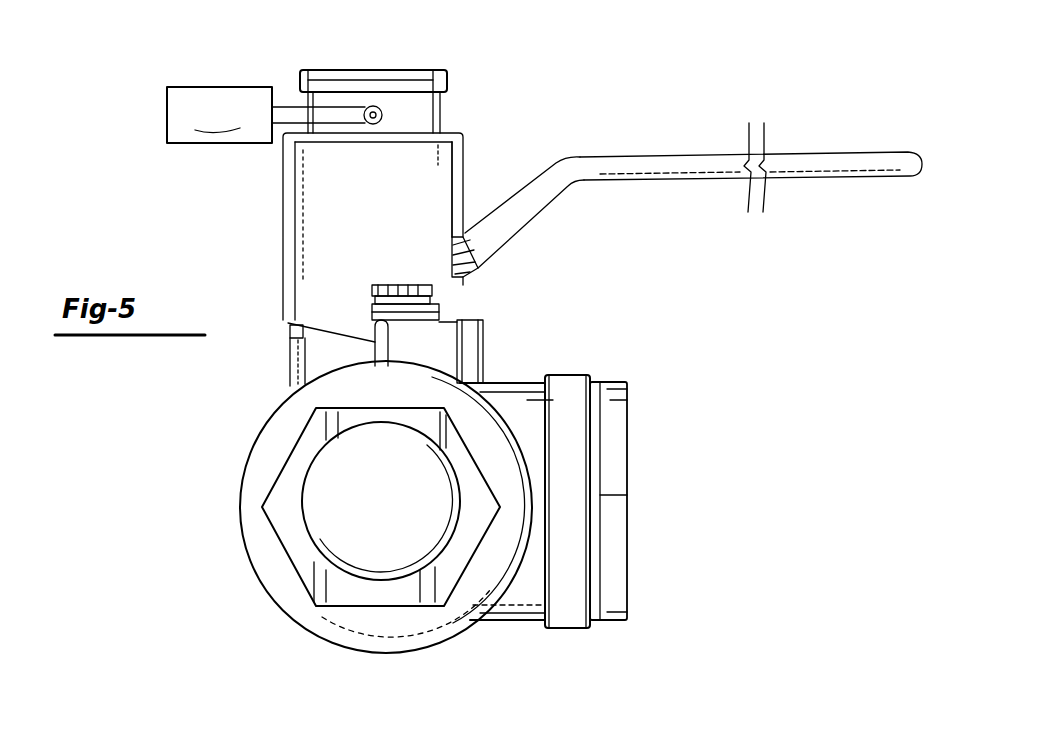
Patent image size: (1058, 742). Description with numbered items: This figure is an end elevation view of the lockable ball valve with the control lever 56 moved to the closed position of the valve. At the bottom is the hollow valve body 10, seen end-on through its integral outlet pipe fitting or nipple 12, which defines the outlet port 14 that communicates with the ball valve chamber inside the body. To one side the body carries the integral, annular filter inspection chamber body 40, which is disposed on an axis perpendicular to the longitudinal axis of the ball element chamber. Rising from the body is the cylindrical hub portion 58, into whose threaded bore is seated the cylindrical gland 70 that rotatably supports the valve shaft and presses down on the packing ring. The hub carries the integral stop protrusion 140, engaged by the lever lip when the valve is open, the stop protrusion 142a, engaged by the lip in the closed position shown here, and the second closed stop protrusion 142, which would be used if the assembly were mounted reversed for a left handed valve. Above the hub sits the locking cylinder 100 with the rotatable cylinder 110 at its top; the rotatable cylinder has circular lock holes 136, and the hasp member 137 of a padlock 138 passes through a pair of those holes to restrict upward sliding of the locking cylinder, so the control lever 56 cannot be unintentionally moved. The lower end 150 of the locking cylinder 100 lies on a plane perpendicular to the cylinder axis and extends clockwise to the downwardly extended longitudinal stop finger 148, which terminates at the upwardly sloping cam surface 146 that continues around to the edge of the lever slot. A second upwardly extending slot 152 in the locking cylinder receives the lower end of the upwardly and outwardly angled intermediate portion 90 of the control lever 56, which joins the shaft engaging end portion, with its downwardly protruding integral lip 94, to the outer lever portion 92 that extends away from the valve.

The hollow valve body 10 is at (257, 440).
The integral outlet pipe fitting or nipple 12 is at (308, 560).
The outlet port 14 is at (300, 492).
The filter inspection chamber body 40 is at (525, 382).
The control lever 56 is at (688, 162).
The cylindrical hub portion 58 is at (457, 332).
The cylindrical gland 70 is at (437, 292).
The intermediate portion of the control lever 90 is at (547, 165).
The control lever portion 92 is at (615, 174).
The integral lip 94 is at (290, 330).
The locking cylinder 100 is at (288, 183).
The rotatable cylinder 110 is at (351, 70).
The circular lock holes 136 is at (382, 112).
The hasp member 137 is at (288, 107).
The padlock 138 is at (266, 115).
The integral stop protrusion 140 is at (393, 340).
The second valve closed stop protrusion 142 is at (476, 352).
The integral stop protrusion 142a is at (307, 358).
The cam surface 146 is at (347, 335).
The stop finger 148 is at (385, 285).
The lower end of the locking cylinder 150 is at (410, 283).
The second upwardly extending slot 152 is at (483, 243).